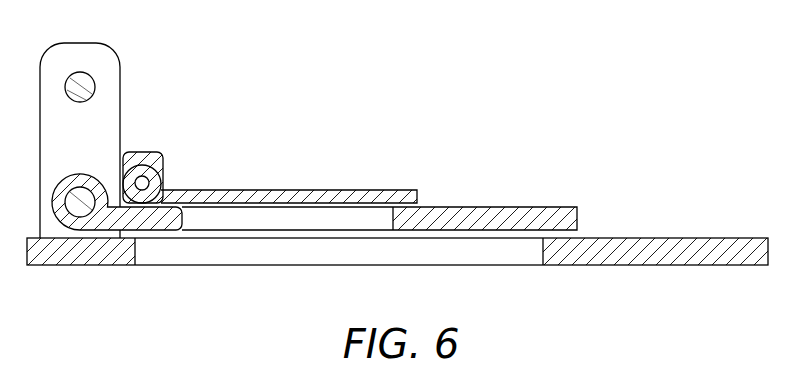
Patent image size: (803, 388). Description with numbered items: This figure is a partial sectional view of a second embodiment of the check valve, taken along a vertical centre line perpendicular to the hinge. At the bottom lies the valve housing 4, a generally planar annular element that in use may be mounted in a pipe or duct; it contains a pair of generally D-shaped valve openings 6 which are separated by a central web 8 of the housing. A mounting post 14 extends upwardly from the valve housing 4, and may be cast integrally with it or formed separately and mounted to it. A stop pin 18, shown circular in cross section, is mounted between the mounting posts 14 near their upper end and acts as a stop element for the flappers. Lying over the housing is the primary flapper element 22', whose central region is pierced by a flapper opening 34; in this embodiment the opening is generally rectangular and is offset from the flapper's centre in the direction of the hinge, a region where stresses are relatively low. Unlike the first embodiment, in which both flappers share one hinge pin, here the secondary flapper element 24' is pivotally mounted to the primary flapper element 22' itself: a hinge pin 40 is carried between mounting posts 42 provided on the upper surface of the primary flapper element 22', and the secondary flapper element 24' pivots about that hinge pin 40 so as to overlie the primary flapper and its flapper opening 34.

The valve housing 4 is at (660, 258).
The valve openings 6 is at (410, 255).
The central web 8 is at (80, 258).
The mounting posts 14 is at (121, 72).
The stop pin 18 is at (80, 82).
The primary flapper element 22' is at (385, 194).
The secondary flapper element 24' is at (286, 171).
The flapper opening 34 is at (297, 222).
The hinge pin 40 is at (150, 183).
The mounting posts 42 is at (140, 152).